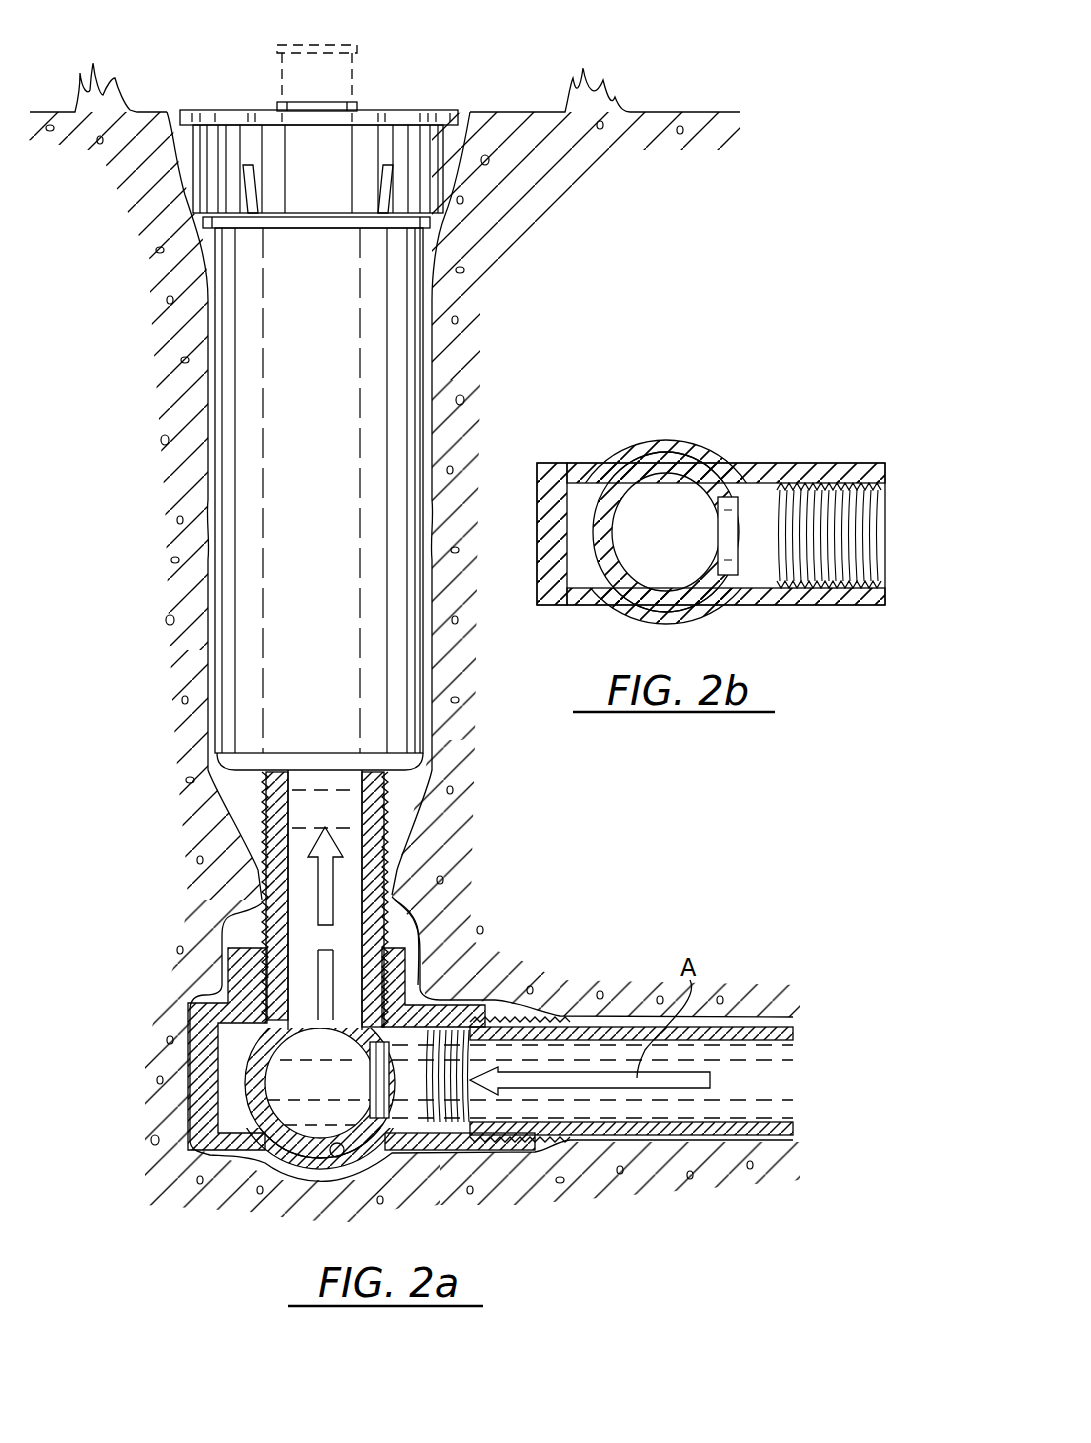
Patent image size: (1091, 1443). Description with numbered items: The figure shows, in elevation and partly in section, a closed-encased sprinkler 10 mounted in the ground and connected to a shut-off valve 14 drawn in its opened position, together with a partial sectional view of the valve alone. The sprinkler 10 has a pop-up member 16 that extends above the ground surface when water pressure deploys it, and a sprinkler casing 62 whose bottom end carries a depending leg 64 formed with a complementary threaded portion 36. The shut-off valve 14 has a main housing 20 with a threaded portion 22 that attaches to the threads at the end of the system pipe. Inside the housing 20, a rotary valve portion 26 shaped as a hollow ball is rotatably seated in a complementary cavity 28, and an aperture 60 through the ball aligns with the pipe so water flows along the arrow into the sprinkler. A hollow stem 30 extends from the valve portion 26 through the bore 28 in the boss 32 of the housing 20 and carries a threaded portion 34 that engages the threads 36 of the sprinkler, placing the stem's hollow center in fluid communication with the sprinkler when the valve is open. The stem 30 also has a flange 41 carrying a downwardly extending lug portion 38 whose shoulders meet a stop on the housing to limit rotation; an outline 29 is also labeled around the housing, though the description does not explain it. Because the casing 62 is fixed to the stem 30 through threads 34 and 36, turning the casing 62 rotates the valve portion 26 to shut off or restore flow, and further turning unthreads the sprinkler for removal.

In FIG. 2A, the sprinkler 10 is at (335, 526).
In FIG. 2A, the shut-off valve 14 is at (592, 1019).
In FIG. 2A, the pop-up member 16 is at (400, 68).
In FIG. 2A, the main housing 20 is at (545, 1005).
In FIG. 2A, the threaded portion 22 is at (250, 972).
In FIG. 2A, the rotary valve portion 26 is at (247, 1110).
In FIG. 2B, the rotary valve portion 26 is at (663, 453).
In FIG. 2A, the cavity 28 is at (340, 1172).
In FIG. 2A, the fitting outline / seal liner 29 is at (190, 1017).
In FIG. 2A, the hollow stem 30 is at (258, 908).
In FIG. 2A, the boss 32 is at (478, 1012).
In FIG. 2A, the threaded portion 34 is at (330, 900).
In FIG. 2A, the complementary threaded portion 36 is at (392, 822).
In FIG. 2A, the lug portion 38 is at (412, 965).
In FIG. 2A, the flange 41 is at (415, 912).
In FIG. 2B, the aperture 60 is at (737, 500).
In FIG. 2A, the sprinkler casing 62 is at (338, 437).
In FIG. 2A, the depending leg 64 is at (387, 787).